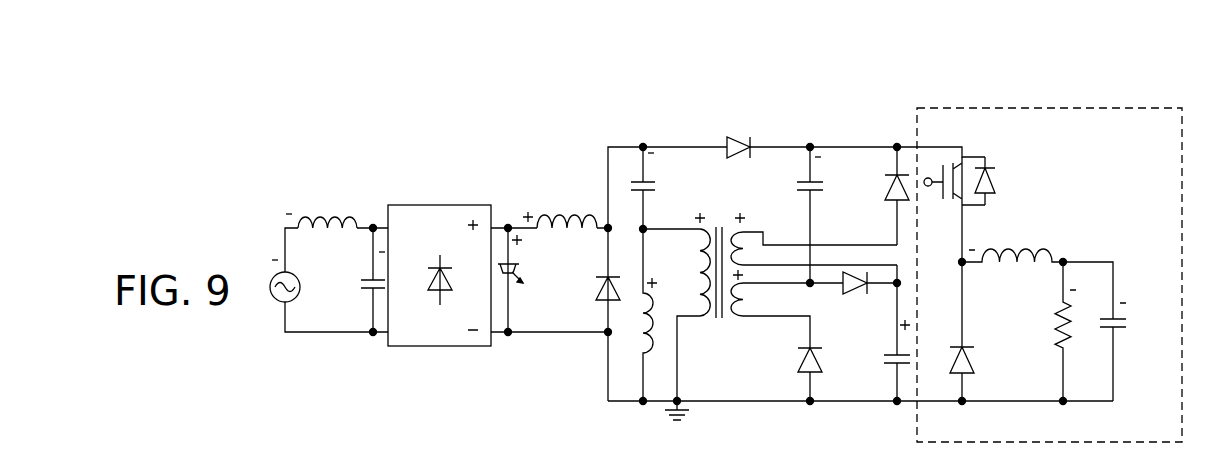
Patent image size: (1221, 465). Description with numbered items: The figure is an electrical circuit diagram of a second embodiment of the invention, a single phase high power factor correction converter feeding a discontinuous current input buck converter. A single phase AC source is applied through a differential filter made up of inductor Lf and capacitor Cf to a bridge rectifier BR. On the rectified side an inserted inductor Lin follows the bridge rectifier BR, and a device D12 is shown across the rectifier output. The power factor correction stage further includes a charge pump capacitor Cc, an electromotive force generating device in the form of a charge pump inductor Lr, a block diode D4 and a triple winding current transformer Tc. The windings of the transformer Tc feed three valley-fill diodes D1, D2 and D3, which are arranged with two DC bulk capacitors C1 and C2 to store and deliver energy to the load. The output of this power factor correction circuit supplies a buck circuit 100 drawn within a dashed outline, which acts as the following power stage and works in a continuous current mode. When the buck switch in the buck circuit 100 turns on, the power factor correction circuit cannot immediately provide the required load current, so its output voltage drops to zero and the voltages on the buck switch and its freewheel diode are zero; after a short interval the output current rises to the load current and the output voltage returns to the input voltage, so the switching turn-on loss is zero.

The buck circuit 100 is at (1032, 106).
The inductor Lf is at (321, 238).
The capacitor Cf is at (356, 280).
The bridge rectifier BR is at (441, 346).
The inserted inductor Lin is at (567, 208).
The diode D12 is at (533, 280).
The charge pump inductor Lr is at (626, 314).
The charge pump capacitor Cc is at (655, 190).
The triple winding current transformer Tc is at (770, 296).
The block diode D4 is at (740, 133).
The DC bulk capacitor C1 is at (795, 217).
The valley-fill diode D2 is at (880, 196).
The valley-fill diode D1 is at (792, 374).
The valley-fill diode D3 is at (872, 299).
The DC bulk capacitor C2 is at (878, 333).